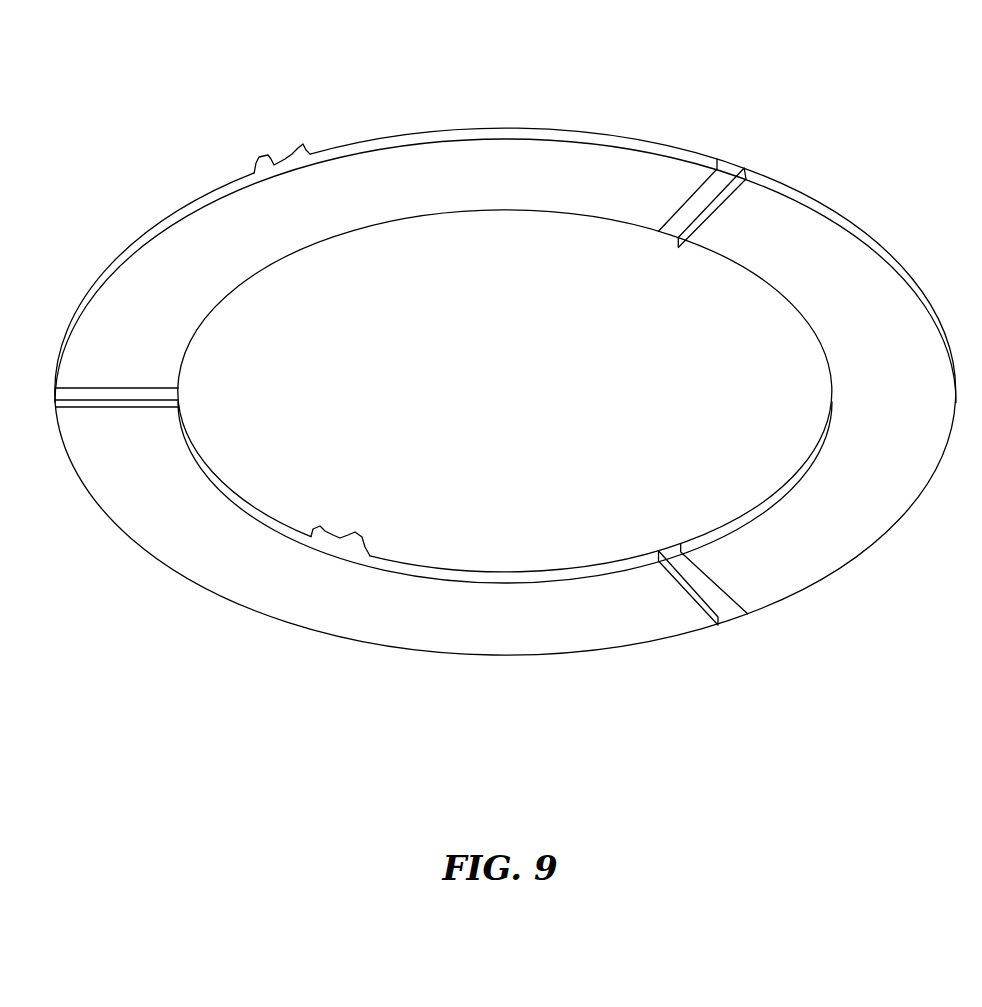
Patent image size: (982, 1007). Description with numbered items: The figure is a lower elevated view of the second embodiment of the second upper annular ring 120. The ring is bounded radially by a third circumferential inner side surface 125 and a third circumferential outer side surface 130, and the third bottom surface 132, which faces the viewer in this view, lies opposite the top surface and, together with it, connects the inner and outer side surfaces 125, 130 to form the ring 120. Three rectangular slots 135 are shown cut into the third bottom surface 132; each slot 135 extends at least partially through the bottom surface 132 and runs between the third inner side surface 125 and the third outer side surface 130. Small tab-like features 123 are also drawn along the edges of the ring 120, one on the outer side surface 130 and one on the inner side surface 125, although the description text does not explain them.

The second upper annular ring 120 is at (518, 363).
The tab 123 is at (290, 152).
The third circumferential inner side surface 125 is at (593, 570).
The third circumferential outer side surface 130 is at (440, 128).
The third bottom surface 132 is at (836, 268).
The rectangular slots 135 is at (694, 206).